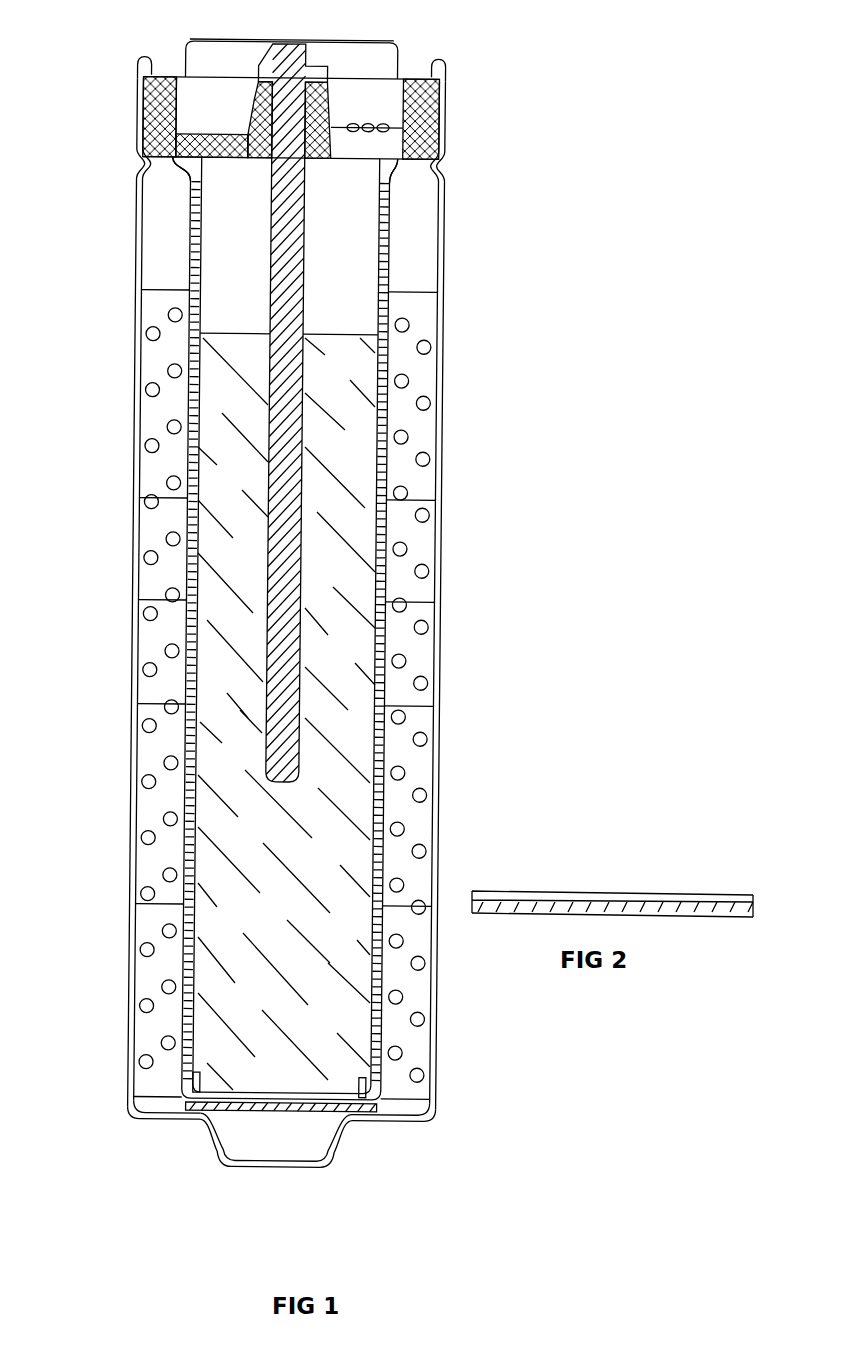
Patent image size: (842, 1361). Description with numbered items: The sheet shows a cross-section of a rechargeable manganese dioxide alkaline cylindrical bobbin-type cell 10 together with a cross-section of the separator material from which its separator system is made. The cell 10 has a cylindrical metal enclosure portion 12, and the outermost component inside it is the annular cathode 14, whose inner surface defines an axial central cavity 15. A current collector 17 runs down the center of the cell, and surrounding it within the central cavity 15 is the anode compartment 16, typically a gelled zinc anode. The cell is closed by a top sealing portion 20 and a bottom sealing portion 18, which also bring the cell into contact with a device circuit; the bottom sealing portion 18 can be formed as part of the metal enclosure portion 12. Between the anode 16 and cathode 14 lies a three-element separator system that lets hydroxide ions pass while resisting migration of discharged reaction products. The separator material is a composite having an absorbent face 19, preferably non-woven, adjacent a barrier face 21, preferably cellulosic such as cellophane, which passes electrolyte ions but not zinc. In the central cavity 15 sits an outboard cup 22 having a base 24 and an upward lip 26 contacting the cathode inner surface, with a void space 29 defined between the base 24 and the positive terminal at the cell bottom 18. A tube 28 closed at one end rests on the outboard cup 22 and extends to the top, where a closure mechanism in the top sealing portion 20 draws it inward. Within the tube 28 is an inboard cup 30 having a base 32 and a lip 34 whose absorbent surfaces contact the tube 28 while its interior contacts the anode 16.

In FIG. 1, the rechargeable manganese dioxide alkaline cylindrical cell 10 is at (303, 631).
In FIG. 1, the cylindrical metal enclosure portion 12 is at (136, 298).
In FIG. 1, the cathode 14 is at (152, 425).
In FIG. 1, the axial central cavity 15 is at (230, 242).
In FIG. 1, the anode compartment 16 is at (232, 602).
In FIG. 1, the current collector 17 is at (282, 483).
In FIG. 1, the bottom sealing portion 18 is at (347, 1135).
In FIG. 2, the absorbent face 19 is at (663, 897).
In FIG. 1, the top sealing portion 20 is at (142, 115).
In FIG. 2, the barrier face 21 is at (700, 915).
In FIG. 1, the outboard cup 22 is at (240, 1117).
In FIG. 1, the base 24 is at (208, 1110).
In FIG. 1, the lip 26 is at (178, 1115).
In FIG. 1, the tube 28 is at (186, 762).
In FIG. 1, the void space 29 is at (283, 1145).
In FIG. 1, the inboard cup 30 is at (207, 1052).
In FIG. 1, the base 32 is at (200, 1030).
In FIG. 1, the lip 34 is at (180, 1080).